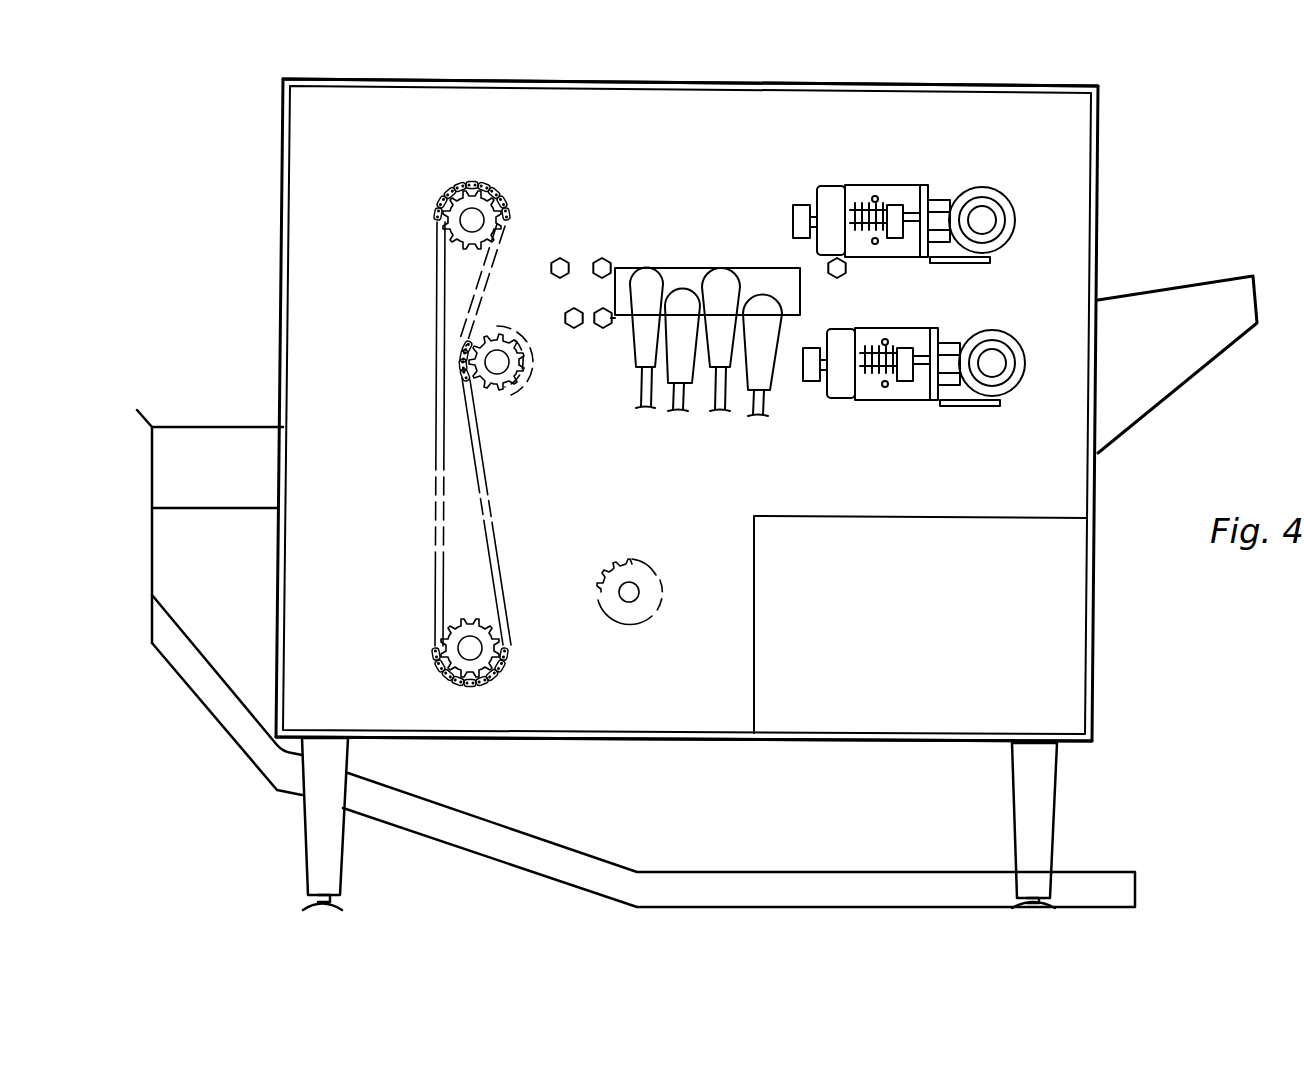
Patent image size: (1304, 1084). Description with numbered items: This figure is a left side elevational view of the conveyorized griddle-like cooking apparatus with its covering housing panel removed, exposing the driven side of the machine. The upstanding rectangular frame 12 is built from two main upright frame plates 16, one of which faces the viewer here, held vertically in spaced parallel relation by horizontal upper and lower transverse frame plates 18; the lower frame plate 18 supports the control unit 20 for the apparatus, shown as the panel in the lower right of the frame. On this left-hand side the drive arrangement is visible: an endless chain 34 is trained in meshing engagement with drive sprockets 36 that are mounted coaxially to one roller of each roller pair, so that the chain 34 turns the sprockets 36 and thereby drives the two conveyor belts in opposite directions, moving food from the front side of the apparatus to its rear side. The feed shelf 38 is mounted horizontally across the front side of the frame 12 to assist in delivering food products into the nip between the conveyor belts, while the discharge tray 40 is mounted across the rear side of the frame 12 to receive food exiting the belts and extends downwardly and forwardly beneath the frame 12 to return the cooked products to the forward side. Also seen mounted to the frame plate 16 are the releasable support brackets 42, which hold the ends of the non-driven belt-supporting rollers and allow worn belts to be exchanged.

The frame 12 is at (960, 83).
The upright frame plate 16 is at (592, 112).
The transverse frame plate 18 is at (680, 85).
The control unit 20 is at (1073, 672).
The endless chain 34 is at (442, 563).
The drive sprocket 36 is at (457, 213).
The feed shelf 38 is at (1162, 297).
The discharge tray 40 is at (152, 478).
The releasable support bracket 42 is at (875, 190).